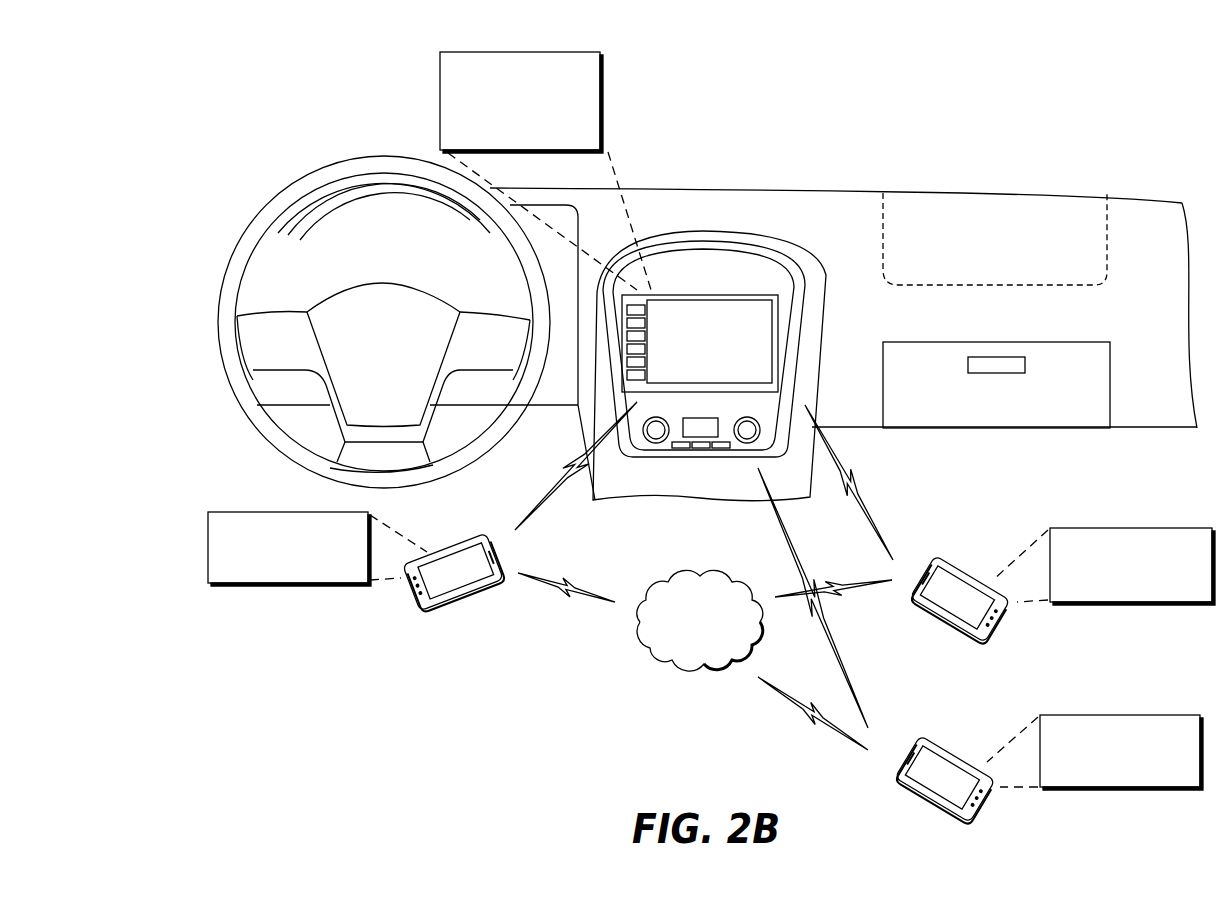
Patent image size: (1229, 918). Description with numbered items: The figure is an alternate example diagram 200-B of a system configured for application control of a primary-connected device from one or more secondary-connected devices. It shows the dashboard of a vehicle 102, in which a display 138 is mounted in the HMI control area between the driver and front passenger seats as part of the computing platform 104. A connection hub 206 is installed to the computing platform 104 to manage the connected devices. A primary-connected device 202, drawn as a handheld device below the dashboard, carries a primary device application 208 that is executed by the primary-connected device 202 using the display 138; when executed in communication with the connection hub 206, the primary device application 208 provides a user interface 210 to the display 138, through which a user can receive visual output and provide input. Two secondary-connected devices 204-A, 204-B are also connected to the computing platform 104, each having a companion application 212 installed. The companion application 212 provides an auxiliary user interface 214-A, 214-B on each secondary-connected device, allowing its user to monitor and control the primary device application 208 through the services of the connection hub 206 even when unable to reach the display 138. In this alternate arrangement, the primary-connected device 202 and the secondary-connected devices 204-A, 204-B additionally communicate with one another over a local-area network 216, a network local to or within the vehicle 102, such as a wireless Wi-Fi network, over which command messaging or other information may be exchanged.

The alternate example diagram 200-B is at (224, 58).
The vehicle 102 is at (1130, 203).
The computing platform 104 is at (707, 294).
The display 138 is at (728, 296).
The user interface 210 is at (763, 341).
The connection hub 206 is at (546, 172).
The primary-connected device 202 is at (477, 534).
The primary device application 208 is at (317, 549).
The secondary-connected device 204-A is at (948, 557).
The secondary-connected device 204-B is at (943, 747).
The auxiliary user interface 214-A is at (952, 605).
The auxiliary user interface 214-B is at (942, 788).
The companion application 212 is at (1101, 659).
The local-area network 216 is at (713, 571).